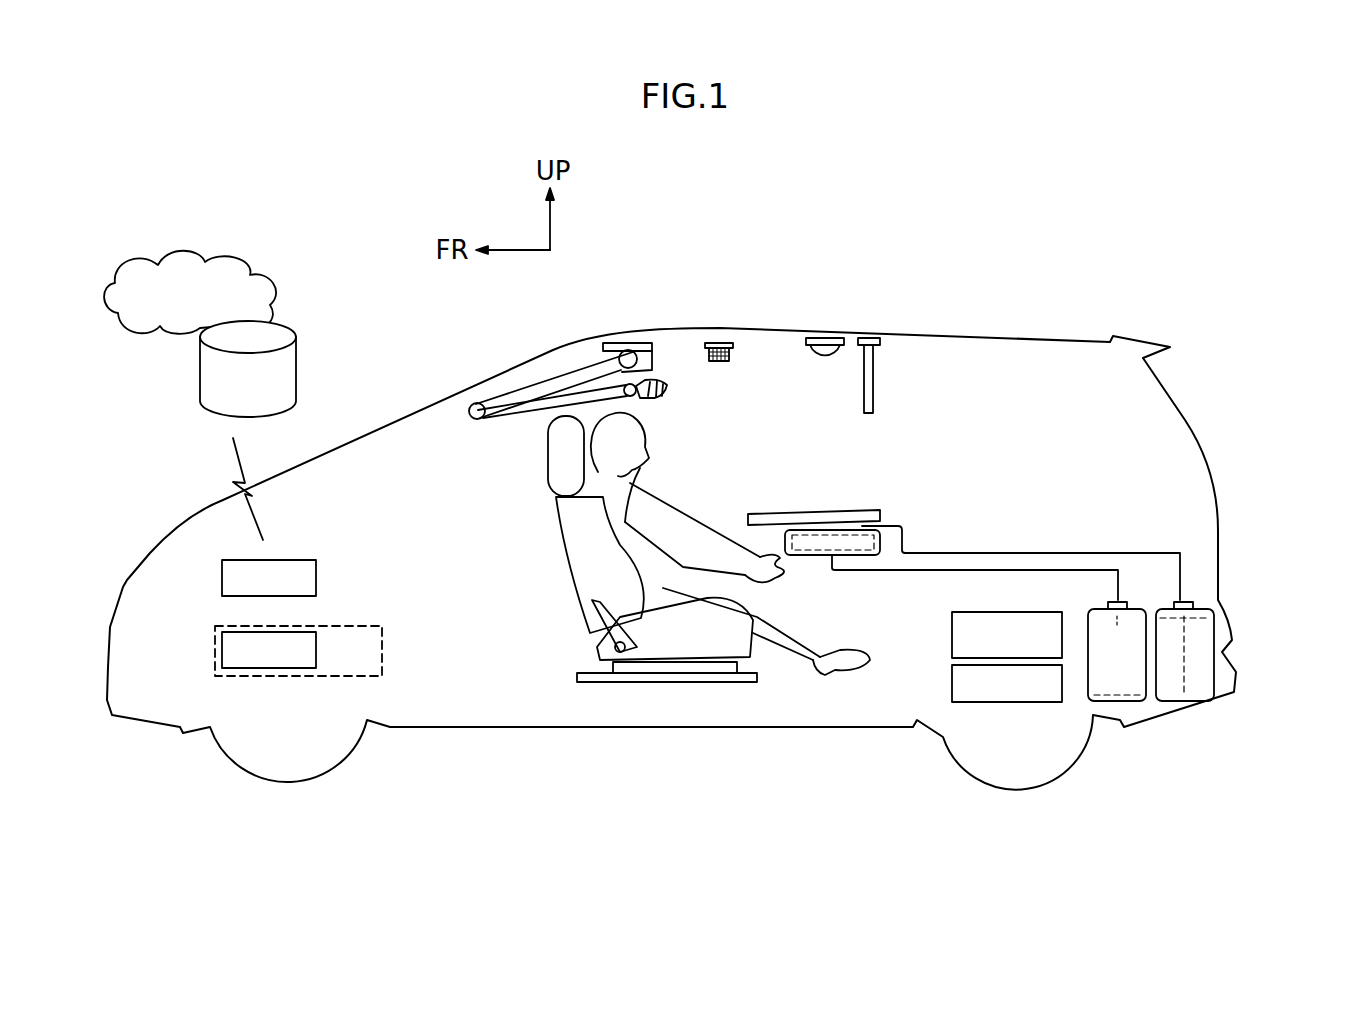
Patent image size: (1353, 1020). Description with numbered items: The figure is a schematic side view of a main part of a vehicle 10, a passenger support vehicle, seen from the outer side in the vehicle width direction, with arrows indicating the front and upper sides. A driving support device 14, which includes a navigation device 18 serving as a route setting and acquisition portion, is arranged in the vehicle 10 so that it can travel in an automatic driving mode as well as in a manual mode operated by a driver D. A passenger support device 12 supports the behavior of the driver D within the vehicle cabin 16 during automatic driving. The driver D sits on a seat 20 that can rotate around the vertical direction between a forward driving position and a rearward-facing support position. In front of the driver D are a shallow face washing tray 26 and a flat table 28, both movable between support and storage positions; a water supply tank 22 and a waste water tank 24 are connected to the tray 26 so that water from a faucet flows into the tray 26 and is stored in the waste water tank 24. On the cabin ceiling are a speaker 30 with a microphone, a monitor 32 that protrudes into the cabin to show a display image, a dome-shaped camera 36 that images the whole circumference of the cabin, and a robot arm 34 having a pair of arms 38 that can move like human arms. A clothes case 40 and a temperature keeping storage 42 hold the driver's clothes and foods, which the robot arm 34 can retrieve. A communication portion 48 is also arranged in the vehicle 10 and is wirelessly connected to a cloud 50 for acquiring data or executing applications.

The vehicle 10 is at (1055, 296).
The passenger support device 12 is at (792, 411).
The driving support device 14 is at (365, 626).
The vehicle cabin 16 is at (1118, 438).
The navigation device 18 is at (290, 670).
The seat 20 is at (575, 628).
The water supply tank 22 is at (1215, 640).
The waste water tank 24 is at (1080, 703).
The tray 26 is at (882, 540).
The table 28 is at (852, 513).
The speaker 30 is at (730, 343).
The monitor 32 is at (878, 375).
The robot arm 34 is at (573, 332).
The camera 36 is at (808, 350).
The arm 38 is at (515, 393).
The clothes case 40 is at (980, 612).
The temperature keeping storage 42 is at (1005, 703).
The communication portion 48 is at (292, 560).
The cloud 50 is at (255, 262).
The driver D is at (650, 428).